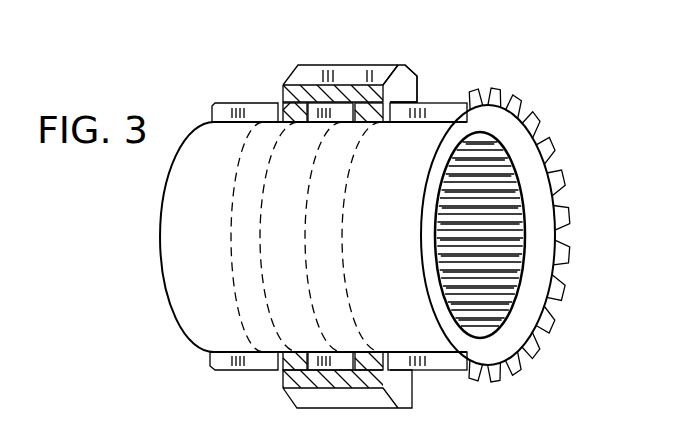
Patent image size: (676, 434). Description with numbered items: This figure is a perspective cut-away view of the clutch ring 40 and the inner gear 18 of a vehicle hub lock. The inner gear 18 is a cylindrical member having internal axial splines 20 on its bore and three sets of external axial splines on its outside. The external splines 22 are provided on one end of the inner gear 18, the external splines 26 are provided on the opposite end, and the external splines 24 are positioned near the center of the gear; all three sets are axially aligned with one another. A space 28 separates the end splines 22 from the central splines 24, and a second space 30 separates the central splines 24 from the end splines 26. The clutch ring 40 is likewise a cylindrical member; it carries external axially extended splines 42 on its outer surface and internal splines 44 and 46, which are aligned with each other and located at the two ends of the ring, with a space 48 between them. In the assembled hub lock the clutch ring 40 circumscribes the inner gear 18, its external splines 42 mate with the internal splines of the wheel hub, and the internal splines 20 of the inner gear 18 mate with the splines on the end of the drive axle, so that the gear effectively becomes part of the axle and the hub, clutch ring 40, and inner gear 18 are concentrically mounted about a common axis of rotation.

The inner gear 18 is at (543, 297).
The internal axial splines 20 is at (517, 212).
The external axial splines 22 is at (247, 102).
The external axial splines 24 is at (318, 112).
The external axial splines 26 is at (497, 103).
The space 28 is at (263, 322).
The space 30 is at (340, 300).
The clutch ring 40 is at (407, 92).
The external axially extended splines 42 is at (380, 64).
The internal splines 44 is at (297, 104).
The internal splines 46 is at (405, 90).
The space 48 is at (332, 120).